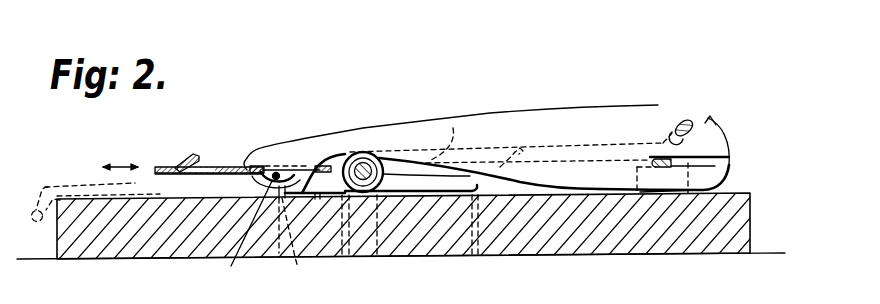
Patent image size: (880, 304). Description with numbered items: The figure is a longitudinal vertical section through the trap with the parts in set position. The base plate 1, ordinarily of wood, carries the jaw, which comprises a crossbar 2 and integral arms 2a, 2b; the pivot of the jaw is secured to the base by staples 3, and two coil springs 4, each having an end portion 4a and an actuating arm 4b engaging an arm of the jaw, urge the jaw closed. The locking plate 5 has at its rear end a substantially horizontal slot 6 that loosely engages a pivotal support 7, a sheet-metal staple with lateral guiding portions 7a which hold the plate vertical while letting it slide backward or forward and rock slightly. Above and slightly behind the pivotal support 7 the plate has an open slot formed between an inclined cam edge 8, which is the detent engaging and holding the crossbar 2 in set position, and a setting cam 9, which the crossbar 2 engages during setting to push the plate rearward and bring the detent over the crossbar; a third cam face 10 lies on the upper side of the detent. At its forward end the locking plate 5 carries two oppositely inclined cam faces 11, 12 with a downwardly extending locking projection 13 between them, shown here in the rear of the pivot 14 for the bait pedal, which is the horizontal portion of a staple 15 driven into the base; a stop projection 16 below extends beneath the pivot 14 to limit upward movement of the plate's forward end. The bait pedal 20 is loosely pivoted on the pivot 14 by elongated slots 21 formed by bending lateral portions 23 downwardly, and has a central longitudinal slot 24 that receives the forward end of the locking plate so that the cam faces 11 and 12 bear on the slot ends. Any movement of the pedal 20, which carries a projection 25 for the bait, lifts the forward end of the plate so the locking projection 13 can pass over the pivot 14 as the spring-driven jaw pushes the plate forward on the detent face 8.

The base plate 1 is at (543, 243).
The crossbar 2 is at (690, 126).
The arm 2a is at (364, 166).
The arm 2b is at (412, 159).
The staples 3 is at (352, 152).
The coil springs 4 is at (398, 170).
The end portion 4a is at (423, 182).
The actuating arm 4b is at (453, 128).
The locking plate 5 is at (488, 116).
The horizontal slot 6 is at (713, 161).
The pivotal support 7 is at (677, 157).
The lateral guiding portions 7a is at (682, 190).
The inclined cam edge 8 is at (678, 121).
The setting cam 9 is at (712, 121).
The third cam face 10 is at (692, 118).
The inclined cam face 11 is at (255, 150).
The inclined cam face 12 is at (312, 160).
The locking projection 13 is at (288, 170).
The pivot 14 is at (277, 171).
The staple 15 is at (298, 268).
The stop projection 16 is at (302, 188).
The bait pedal 20 is at (221, 166).
The elongated slots 21 is at (270, 176).
The lateral portions 23 is at (250, 231).
The longitudinal slot 24 is at (262, 168).
The projection 25 is at (184, 157).